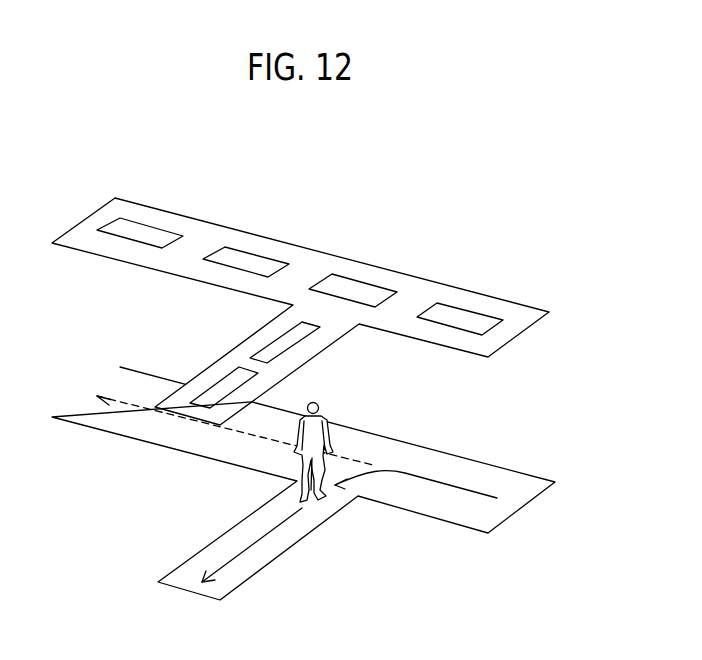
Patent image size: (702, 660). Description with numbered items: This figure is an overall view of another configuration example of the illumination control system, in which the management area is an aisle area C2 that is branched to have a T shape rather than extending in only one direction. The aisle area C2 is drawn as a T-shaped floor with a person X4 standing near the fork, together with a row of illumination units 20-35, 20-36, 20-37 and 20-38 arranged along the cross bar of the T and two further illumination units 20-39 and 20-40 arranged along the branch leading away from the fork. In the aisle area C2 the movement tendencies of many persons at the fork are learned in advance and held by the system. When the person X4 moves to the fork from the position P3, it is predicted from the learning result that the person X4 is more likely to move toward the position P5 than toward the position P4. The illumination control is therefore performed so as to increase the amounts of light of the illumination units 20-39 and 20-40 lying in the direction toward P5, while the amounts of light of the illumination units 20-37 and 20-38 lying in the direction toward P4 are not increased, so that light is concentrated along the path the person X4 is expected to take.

The display device 20-35 is at (473, 311).
The display device 20-36 is at (370, 283).
The illumination unit 20-37 is at (253, 253).
The illumination unit 20-38 is at (148, 226).
The illumination unit 20-39 is at (267, 346).
The illumination unit 20-40 is at (217, 381).
The position P3 is at (449, 505).
The position P4 is at (213, 416).
The position P5 is at (234, 568).
The person X4 is at (332, 430).
The aisle area C2 is at (435, 518).